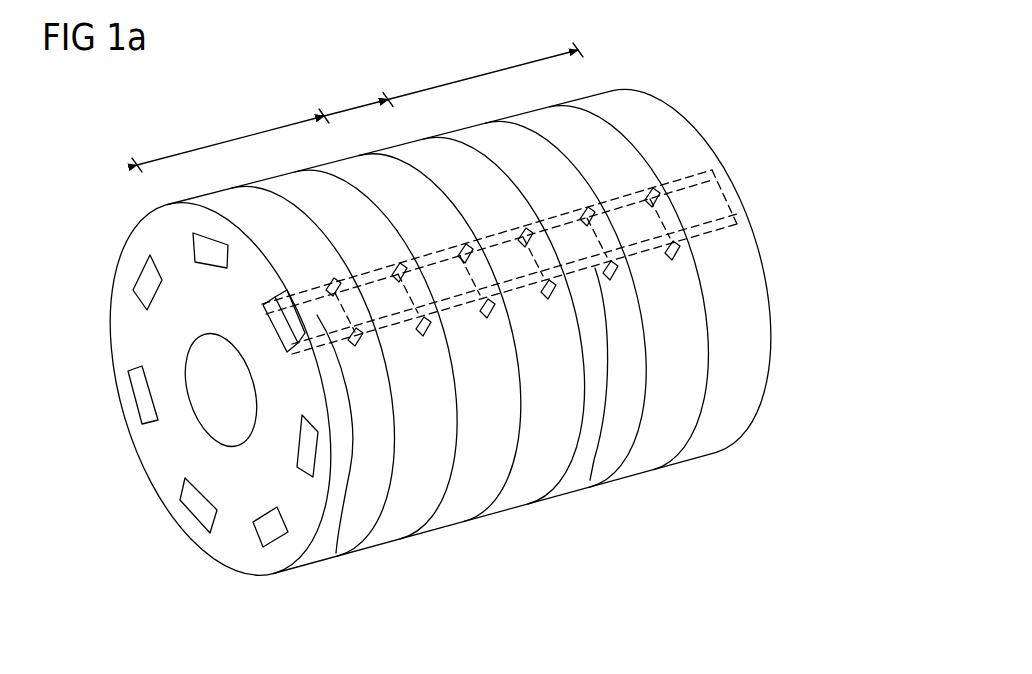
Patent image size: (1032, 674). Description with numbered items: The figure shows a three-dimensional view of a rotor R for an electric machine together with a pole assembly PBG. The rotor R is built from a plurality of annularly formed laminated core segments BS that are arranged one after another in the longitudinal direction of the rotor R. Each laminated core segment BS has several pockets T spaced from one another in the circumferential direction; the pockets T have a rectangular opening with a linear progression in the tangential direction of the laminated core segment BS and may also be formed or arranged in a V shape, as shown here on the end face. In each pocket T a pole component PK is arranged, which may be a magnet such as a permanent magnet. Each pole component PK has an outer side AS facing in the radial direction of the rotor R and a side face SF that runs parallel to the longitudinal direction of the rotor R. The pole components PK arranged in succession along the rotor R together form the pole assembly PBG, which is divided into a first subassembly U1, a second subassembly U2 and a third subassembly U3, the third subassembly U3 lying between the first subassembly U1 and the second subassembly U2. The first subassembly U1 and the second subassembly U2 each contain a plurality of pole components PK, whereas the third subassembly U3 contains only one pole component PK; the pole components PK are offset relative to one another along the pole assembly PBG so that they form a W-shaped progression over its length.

The rotor R is at (711, 82).
The pole assembly PBG is at (492, 379).
The laminated core segment BS is at (166, 456).
The pole component PK is at (336, 553).
The pocket T is at (150, 283).
The outer side AS is at (698, 202).
The side face SF is at (712, 228).
The first subassembly U1 is at (230, 132).
The second subassembly U2 is at (485, 66).
The third subassembly U3 is at (358, 87).